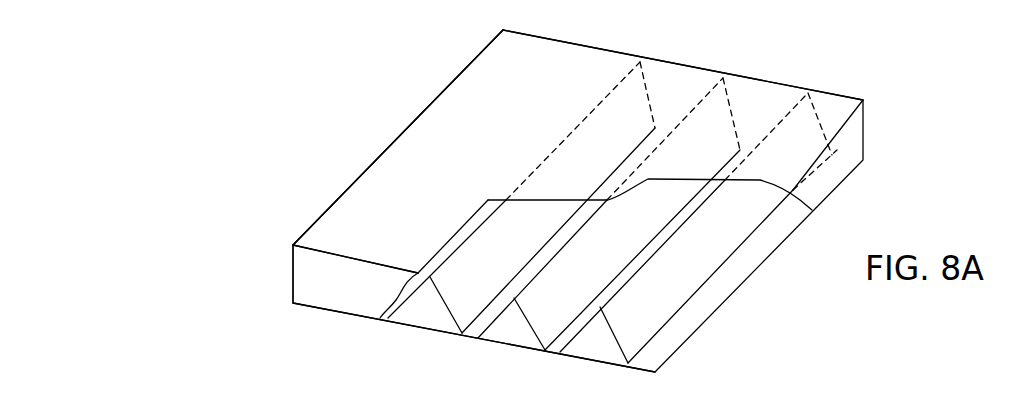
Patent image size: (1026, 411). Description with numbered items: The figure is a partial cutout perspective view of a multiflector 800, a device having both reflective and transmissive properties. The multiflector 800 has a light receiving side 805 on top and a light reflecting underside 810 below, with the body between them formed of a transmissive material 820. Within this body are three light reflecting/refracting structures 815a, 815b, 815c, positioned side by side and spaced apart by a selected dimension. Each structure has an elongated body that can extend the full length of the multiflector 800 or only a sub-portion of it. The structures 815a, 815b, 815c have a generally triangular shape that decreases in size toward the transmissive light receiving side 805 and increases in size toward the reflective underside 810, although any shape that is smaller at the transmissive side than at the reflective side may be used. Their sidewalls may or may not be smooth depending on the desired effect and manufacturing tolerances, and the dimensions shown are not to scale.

The multiflector 800 is at (888, 97).
The light receiving side 805 is at (438, 110).
The transmissive material 820 is at (390, 173).
The light reflecting underside 810 is at (340, 324).
The light reflecting/refracting structure 815a is at (420, 317).
The light reflecting/refracting structure 815b is at (502, 330).
The light reflecting/refracting structure 815c is at (600, 345).